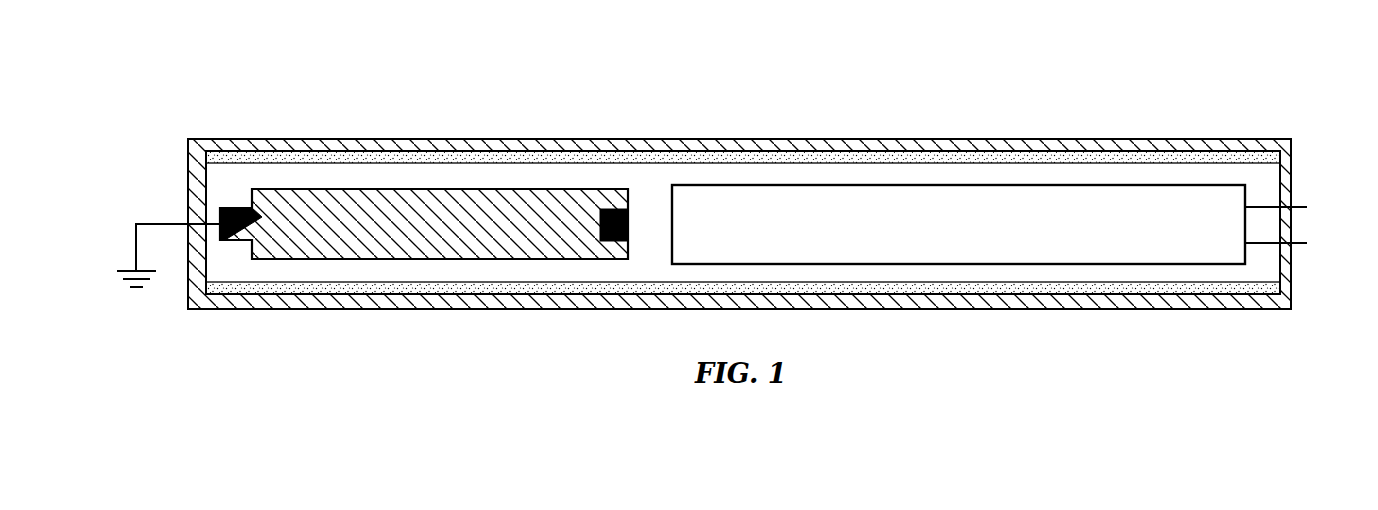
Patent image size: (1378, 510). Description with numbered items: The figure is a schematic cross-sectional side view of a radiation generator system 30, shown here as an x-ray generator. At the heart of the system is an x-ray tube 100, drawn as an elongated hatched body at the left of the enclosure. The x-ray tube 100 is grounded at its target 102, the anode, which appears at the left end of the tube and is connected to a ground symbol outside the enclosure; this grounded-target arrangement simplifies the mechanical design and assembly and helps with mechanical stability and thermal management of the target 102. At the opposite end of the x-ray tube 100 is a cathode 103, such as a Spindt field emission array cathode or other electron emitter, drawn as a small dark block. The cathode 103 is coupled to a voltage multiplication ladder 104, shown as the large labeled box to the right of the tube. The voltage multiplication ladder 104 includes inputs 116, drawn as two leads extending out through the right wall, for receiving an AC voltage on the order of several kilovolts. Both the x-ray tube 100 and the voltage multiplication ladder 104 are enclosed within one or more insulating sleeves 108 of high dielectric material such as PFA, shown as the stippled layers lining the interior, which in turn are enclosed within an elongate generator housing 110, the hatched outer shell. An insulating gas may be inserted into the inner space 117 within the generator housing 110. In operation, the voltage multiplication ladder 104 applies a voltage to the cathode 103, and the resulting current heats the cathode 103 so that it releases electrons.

The radiation generator system 30 is at (938, 57).
The x-ray tube 100 is at (440, 189).
The target 102 is at (238, 210).
The cathode 103 is at (614, 209).
The voltage multiplication ladder 104 is at (959, 185).
The insulating sleeve 108 is at (1147, 160).
The generator housing 110 is at (849, 141).
The inputs 116 is at (1247, 204).
The inner space 117 is at (701, 176).